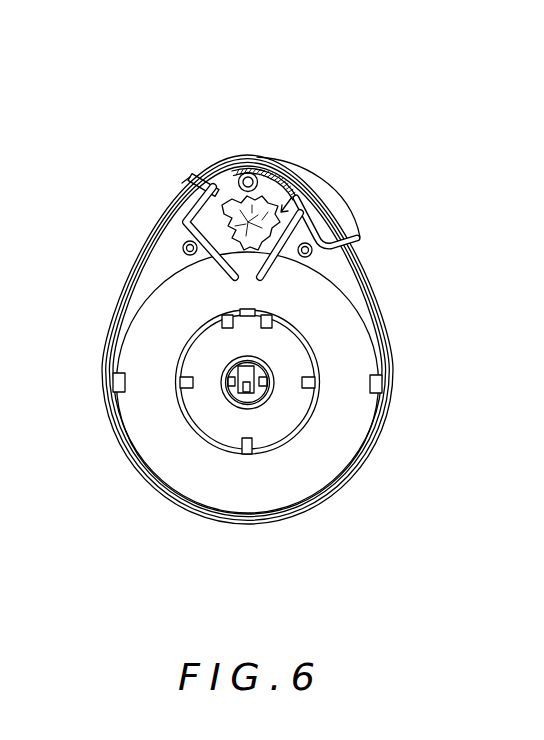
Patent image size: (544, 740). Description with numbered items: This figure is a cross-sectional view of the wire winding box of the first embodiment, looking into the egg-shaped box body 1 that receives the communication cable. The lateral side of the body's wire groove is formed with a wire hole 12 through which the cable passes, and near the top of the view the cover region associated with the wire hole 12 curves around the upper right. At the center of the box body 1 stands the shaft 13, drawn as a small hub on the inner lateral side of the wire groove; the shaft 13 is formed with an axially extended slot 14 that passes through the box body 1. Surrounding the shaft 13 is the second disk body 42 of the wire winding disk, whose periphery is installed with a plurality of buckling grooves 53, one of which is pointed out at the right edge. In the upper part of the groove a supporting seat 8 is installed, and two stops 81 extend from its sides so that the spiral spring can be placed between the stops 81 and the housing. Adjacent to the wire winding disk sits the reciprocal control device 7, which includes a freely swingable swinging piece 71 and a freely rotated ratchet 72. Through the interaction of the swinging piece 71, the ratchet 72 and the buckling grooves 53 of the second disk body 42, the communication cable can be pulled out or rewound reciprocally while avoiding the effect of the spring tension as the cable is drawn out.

The wire winding box body 1 is at (245, 153).
The reciprocal control device 7 is at (296, 213).
The supporting seat 8 is at (265, 162).
The wire hole 12 is at (352, 227).
The shaft 13 is at (238, 400).
The axially extended slot 14 is at (247, 407).
The second disk body 42 is at (172, 470).
The buckling grooves 53 is at (382, 386).
The swinging piece 71 is at (231, 170).
The ratchet 72 is at (191, 182).
The stops 81 is at (207, 258).